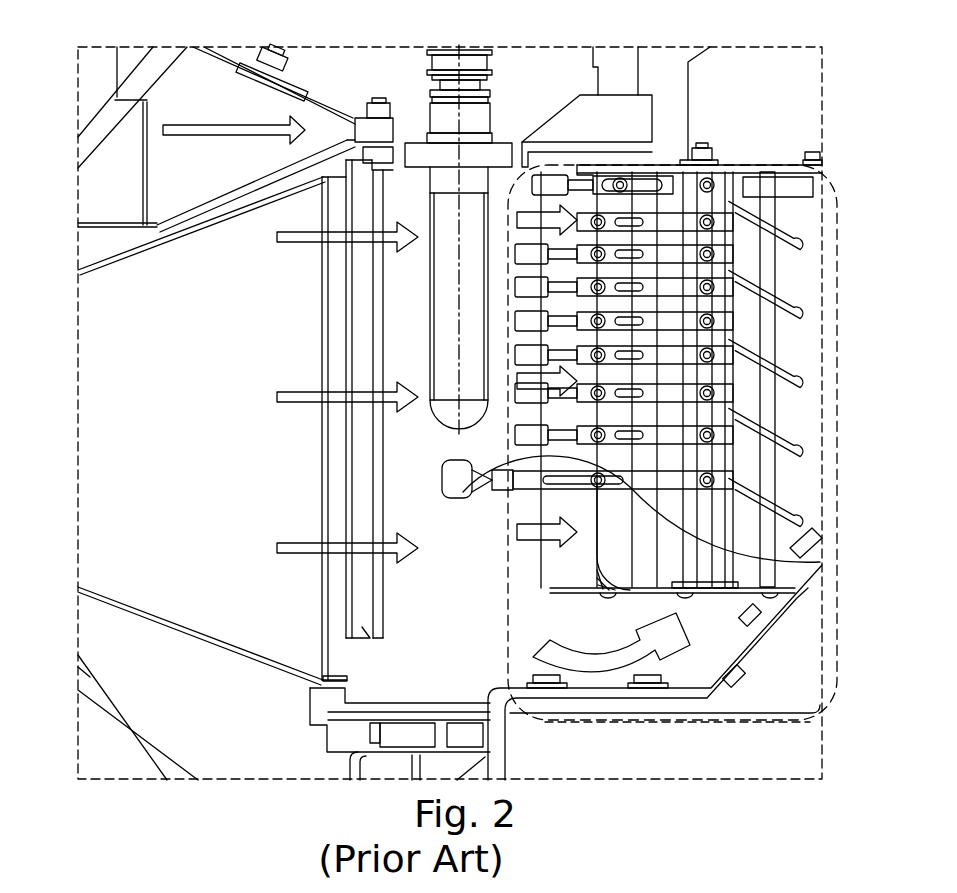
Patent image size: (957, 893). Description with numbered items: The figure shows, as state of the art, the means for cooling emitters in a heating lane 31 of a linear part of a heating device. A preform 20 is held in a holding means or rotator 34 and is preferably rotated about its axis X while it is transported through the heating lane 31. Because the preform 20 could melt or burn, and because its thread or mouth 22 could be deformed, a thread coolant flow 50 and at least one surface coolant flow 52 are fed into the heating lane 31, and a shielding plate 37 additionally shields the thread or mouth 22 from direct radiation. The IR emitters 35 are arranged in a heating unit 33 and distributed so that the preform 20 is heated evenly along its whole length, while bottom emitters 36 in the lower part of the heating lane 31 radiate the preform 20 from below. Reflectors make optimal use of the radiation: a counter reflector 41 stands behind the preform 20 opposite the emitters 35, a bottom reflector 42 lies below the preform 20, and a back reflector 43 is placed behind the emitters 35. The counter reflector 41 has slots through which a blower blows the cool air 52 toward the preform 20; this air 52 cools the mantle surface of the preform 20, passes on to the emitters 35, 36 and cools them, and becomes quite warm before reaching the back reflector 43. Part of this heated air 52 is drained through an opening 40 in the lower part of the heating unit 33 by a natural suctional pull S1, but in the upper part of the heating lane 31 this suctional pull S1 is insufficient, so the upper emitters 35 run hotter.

The preform 20 is at (473, 321).
The thread or mouth 22 is at (442, 118).
The heating lane 31 is at (472, 558).
The heating unit 33 is at (840, 615).
The holding means or rotator 34 is at (487, 92).
The emitters 35 is at (530, 435).
The bottom emitters 36 is at (820, 560).
The shielding plate 37 is at (495, 153).
The opening 40 is at (615, 650).
The counter reflector 41 is at (357, 593).
The bottom reflector 42 is at (367, 703).
The back reflector 43 is at (615, 552).
The thread coolant flow 50 is at (234, 121).
The surface coolant flow 52 is at (411, 426).
The natural suctional pull S1 is at (593, 683).
The axis X is at (459, 227).